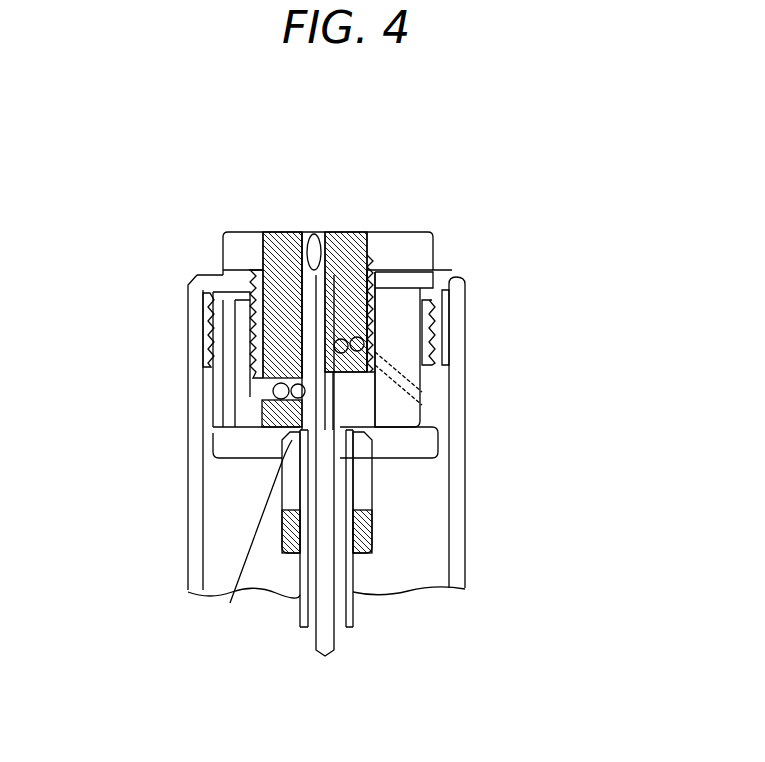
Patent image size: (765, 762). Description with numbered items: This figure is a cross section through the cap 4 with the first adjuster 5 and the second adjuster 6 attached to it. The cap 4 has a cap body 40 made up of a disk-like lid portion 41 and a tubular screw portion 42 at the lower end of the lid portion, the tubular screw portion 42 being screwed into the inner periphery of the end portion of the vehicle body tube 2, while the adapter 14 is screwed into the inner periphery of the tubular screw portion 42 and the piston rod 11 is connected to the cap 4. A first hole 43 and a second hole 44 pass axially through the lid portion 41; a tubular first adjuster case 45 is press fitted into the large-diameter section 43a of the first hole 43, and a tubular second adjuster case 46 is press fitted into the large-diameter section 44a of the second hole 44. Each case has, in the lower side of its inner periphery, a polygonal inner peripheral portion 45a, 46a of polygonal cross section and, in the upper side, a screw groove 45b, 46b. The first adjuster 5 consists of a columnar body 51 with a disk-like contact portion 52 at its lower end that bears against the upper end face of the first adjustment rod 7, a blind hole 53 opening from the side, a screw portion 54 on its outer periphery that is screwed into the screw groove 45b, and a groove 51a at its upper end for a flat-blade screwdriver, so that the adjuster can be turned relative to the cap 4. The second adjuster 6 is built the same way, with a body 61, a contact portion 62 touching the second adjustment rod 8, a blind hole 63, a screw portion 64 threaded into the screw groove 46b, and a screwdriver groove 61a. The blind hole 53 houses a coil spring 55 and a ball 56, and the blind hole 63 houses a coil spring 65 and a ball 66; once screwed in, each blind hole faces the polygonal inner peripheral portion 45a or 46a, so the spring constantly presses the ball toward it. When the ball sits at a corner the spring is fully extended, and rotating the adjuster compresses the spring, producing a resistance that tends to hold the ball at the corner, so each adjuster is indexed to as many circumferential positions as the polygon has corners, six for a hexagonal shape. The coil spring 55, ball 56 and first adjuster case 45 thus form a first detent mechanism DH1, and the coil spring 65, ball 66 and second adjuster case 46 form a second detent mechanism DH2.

The vehicle body tube 2 is at (458, 556).
The cap 4 is at (458, 264).
The first adjuster 5 is at (447, 262).
The second adjuster 6 is at (246, 250).
The first adjustment rod 7 is at (332, 652).
The second adjustment rod 8 is at (356, 603).
The piston rod 11 is at (302, 600).
The adapter 14 is at (452, 455).
The cap body 40 is at (238, 231).
The lid portion 41 is at (405, 233).
The tubular screw portion 42 is at (472, 325).
The first hole 43 is at (372, 254).
The large-diameter section 43a is at (454, 274).
The second hole 44 is at (312, 245).
The large-diameter section 44a is at (250, 287).
The first adjuster case 45 is at (463, 318).
The polygonal inner peripheral portion 45a is at (470, 333).
The screw groove 45b is at (470, 291).
The second adjuster case 46 is at (240, 333).
The polygonal inner peripheral portion 46a is at (196, 412).
The screw groove 46b is at (190, 330).
The body 51 is at (353, 238).
The groove 51a is at (357, 236).
The contact portion 52 is at (440, 452).
The blind hole 53 is at (333, 376).
The screw portion 54 is at (325, 240).
The coil spring 55 is at (463, 357).
The ball 56 is at (472, 403).
The body 61 is at (290, 231).
The groove 61a is at (278, 232).
The contact portion 62 is at (196, 447).
The blind hole 63 is at (280, 440).
The screw portion 64 is at (218, 370).
The coil spring 65 is at (222, 377).
The ball 66 is at (357, 443).
The first detent mechanism DH1 is at (467, 383).
The second detent mechanism DH2 is at (240, 543).